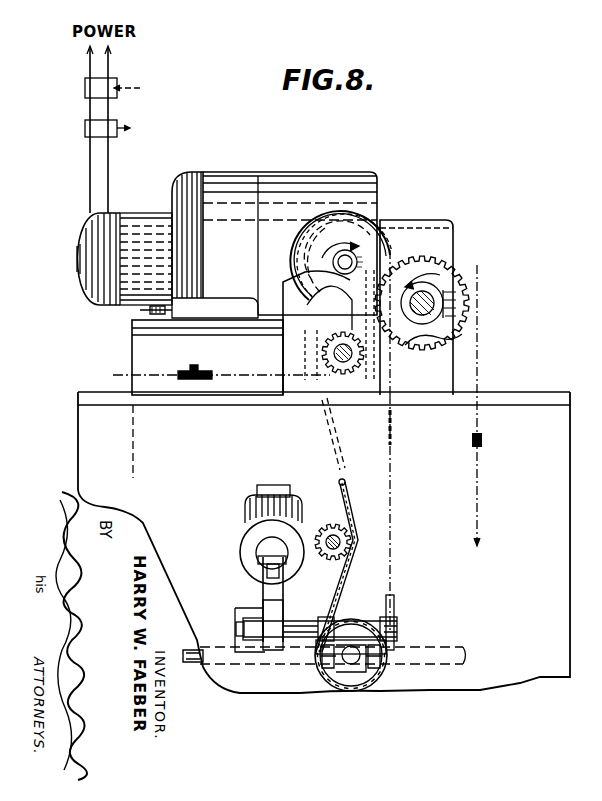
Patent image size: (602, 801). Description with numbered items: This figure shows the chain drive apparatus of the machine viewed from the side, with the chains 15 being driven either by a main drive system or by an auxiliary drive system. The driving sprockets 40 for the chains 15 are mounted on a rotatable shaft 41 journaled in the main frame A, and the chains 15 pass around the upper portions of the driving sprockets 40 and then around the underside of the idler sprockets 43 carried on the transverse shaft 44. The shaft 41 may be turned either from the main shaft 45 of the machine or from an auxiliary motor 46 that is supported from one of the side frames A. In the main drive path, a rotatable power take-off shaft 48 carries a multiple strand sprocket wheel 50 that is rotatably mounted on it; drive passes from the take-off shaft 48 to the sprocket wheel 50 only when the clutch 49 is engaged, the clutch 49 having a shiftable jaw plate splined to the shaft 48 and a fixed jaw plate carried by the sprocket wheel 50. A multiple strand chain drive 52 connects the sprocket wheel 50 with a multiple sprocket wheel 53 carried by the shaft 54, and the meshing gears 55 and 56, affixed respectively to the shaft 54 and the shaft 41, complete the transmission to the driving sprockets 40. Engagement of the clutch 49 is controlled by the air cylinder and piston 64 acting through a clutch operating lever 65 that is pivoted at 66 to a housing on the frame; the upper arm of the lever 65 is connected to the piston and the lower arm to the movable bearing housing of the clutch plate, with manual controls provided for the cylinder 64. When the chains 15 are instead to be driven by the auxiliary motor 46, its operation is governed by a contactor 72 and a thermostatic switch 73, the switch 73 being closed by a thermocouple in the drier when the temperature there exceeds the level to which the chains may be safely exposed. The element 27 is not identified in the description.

The thermostatic switch 73 is at (85, 88).
The contactor 72 is at (85, 132).
The auxiliary motor 46 is at (245, 172).
The shaft 54 is at (350, 258).
The multiple sprocket wheel 53 is at (366, 254).
The chains 15 is at (453, 249).
The driving sprockets 40 is at (428, 298).
The rotatable shaft 41 is at (470, 285).
The shaft 27 is at (462, 320).
The gear 56 is at (443, 350).
The gear 55 is at (318, 312).
The idler sprockets 43 is at (338, 348).
The transverse shaft 44 is at (335, 402).
The multiple strand chain drive 52 is at (344, 486).
The air cylinder and piston 64 is at (250, 526).
The clutch operating lever 65 is at (262, 594).
The pivot 66 is at (296, 620).
The main shaft 45 is at (193, 668).
The multiple strand sprocket wheel 50 is at (336, 675).
The power take-off shaft 48 is at (349, 665).
The clutch 49 is at (365, 672).
The main frame A is at (549, 392).